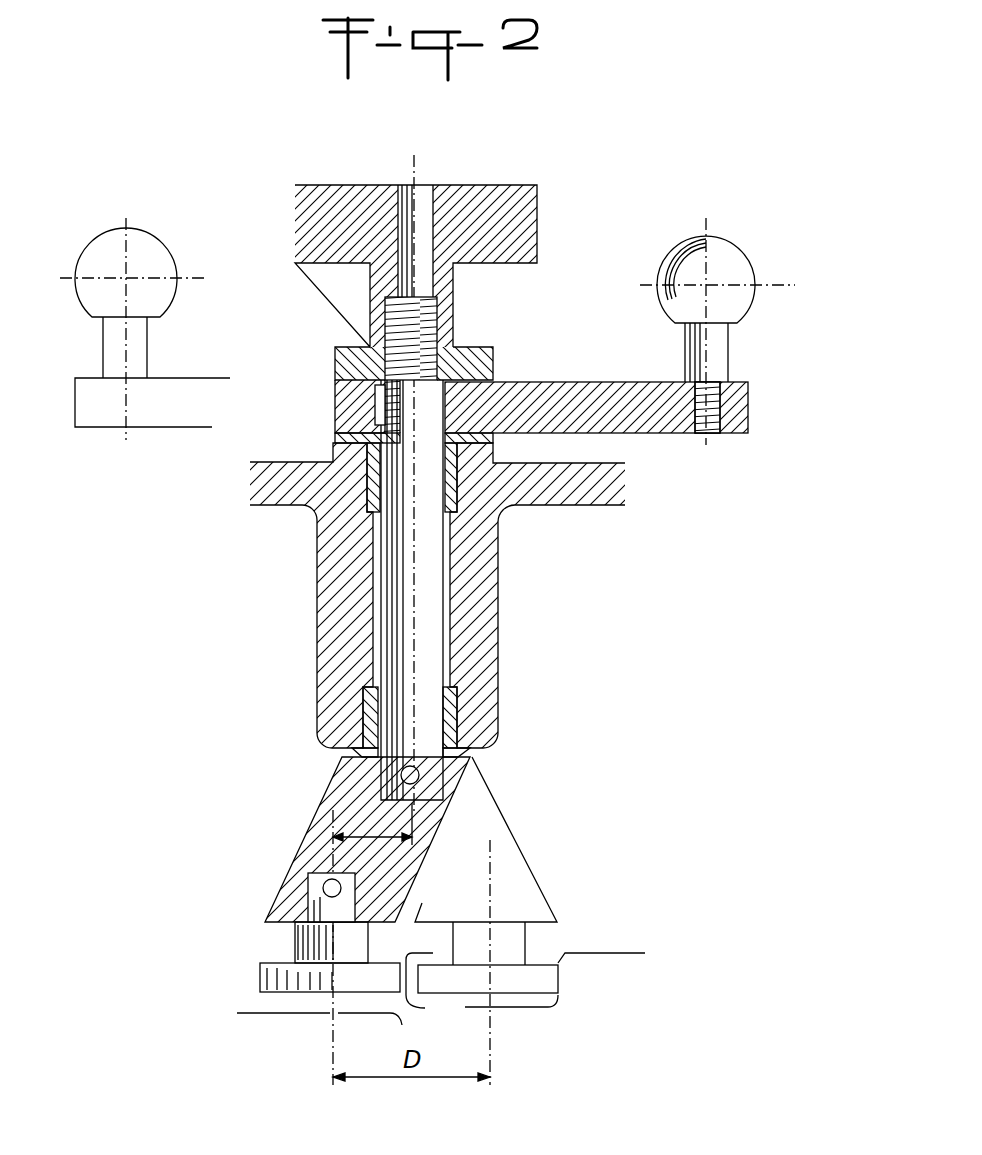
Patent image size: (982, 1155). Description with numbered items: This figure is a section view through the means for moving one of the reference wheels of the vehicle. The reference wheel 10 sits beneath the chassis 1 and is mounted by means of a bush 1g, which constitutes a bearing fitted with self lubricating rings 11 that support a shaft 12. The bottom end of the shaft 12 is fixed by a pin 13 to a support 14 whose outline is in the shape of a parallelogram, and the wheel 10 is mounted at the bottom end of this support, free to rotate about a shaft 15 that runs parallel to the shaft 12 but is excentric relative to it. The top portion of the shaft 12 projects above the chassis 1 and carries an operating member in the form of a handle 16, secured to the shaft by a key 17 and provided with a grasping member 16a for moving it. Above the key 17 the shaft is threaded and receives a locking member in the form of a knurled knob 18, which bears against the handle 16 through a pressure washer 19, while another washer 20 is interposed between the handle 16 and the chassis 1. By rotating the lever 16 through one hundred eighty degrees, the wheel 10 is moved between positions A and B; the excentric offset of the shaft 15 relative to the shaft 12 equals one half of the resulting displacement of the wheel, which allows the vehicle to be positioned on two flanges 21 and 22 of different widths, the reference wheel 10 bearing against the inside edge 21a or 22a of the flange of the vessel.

The chassis 1 is at (262, 497).
The bush 1g is at (345, 640).
The reference wheel 10 is at (265, 980).
The self lubricating rings 11 is at (465, 467).
The shaft 12 is at (427, 330).
The pin 13 is at (420, 775).
The support 14 is at (345, 815).
The shaft 15 is at (318, 890).
The handle 16 is at (520, 400).
The grasping member 16a is at (740, 283).
The key 17 is at (335, 410).
The knurled knob 18 is at (500, 207).
The pressure washer 19 is at (352, 345).
The washer 20 is at (333, 437).
The flange 21 is at (237, 1018).
The inside edge 21a is at (400, 990).
The flange 22 is at (527, 1010).
The inside edge 22a is at (560, 980).
The position A is at (687, 262).
The position B is at (100, 255).